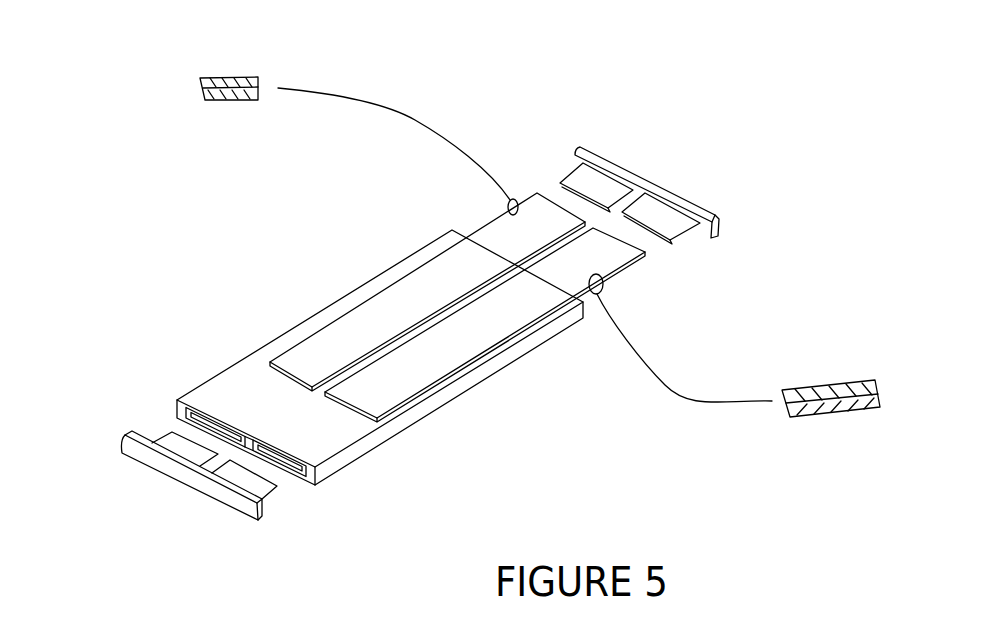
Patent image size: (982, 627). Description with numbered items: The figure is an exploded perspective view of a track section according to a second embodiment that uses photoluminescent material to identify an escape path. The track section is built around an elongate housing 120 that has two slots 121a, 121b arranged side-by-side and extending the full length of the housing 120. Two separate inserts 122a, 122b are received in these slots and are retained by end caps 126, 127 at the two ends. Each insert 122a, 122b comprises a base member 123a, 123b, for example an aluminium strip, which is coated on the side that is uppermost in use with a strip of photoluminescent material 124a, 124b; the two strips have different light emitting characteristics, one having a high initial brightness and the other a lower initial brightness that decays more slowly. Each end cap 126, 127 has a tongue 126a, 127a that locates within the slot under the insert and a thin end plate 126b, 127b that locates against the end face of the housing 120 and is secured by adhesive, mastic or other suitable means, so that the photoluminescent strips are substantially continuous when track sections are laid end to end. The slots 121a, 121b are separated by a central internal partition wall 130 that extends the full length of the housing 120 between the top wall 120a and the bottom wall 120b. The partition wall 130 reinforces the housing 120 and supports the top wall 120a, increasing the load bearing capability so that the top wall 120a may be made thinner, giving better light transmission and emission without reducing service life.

The housing 120 is at (493, 382).
The top wall 120a is at (248, 365).
The bottom wall 120b is at (350, 462).
The first slot 121a is at (198, 418).
The second slot 121b is at (298, 472).
The first insert 122a is at (497, 213).
The second insert 122b is at (597, 267).
The base member 123a is at (222, 105).
The base member 123b is at (812, 418).
The strip of photoluminescent material 124a is at (222, 72).
The strip of photoluminescent material 124b is at (825, 382).
The end cap 126 is at (125, 435).
The tongue 126a is at (272, 492).
The end plate 126b is at (185, 478).
The end cap 127 is at (655, 177).
The tongue 127a is at (587, 182).
The end plate 127b is at (716, 208).
The central internal partition wall 130 is at (248, 438).